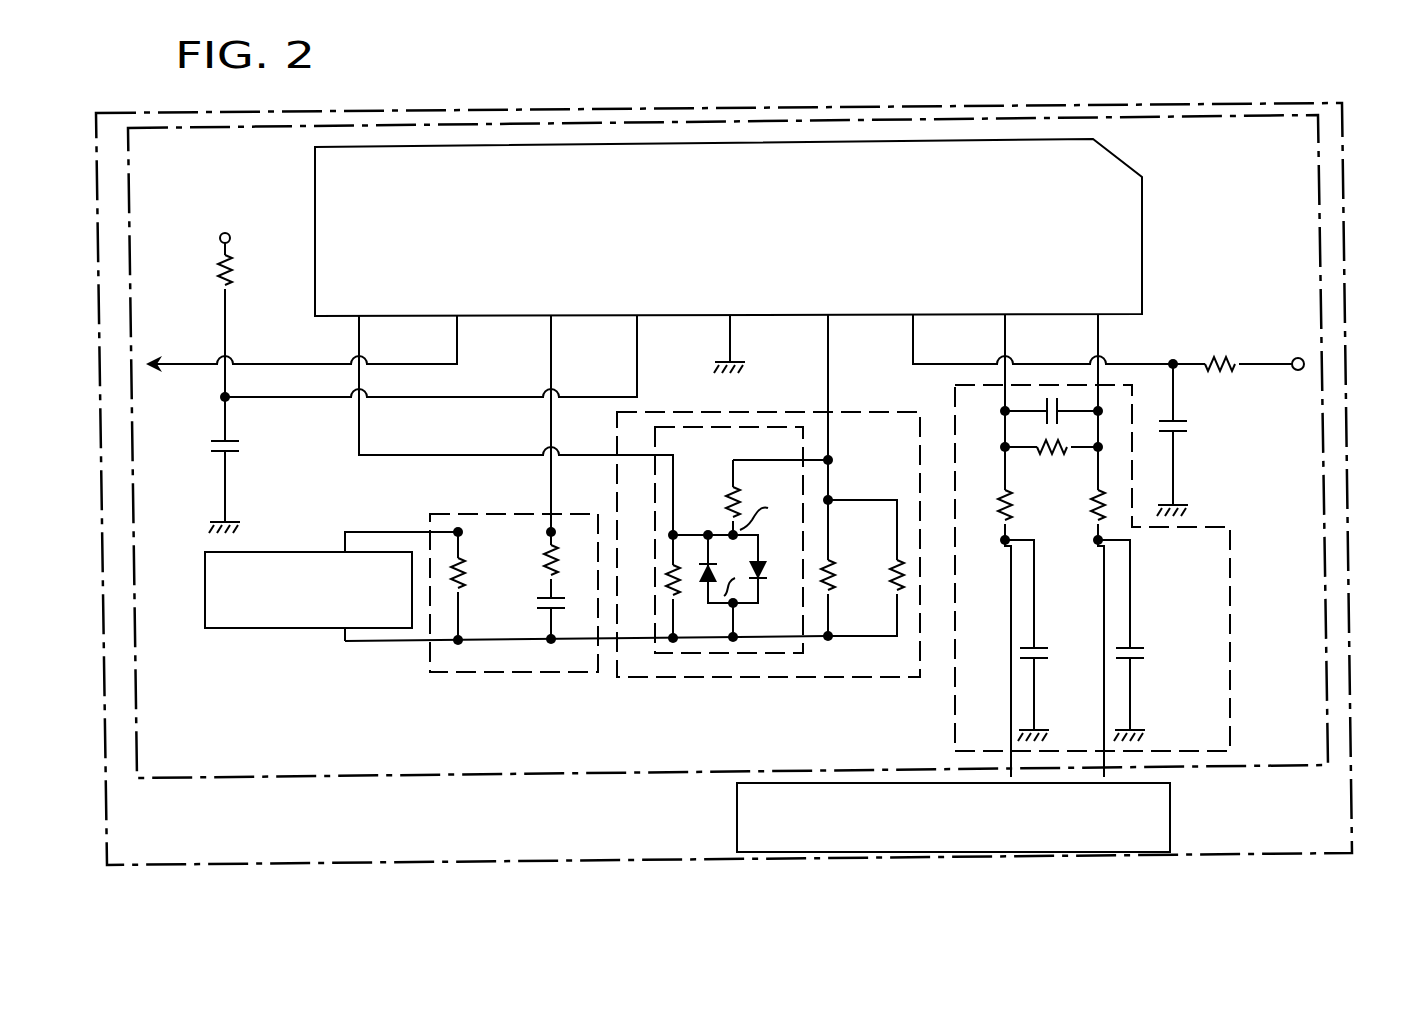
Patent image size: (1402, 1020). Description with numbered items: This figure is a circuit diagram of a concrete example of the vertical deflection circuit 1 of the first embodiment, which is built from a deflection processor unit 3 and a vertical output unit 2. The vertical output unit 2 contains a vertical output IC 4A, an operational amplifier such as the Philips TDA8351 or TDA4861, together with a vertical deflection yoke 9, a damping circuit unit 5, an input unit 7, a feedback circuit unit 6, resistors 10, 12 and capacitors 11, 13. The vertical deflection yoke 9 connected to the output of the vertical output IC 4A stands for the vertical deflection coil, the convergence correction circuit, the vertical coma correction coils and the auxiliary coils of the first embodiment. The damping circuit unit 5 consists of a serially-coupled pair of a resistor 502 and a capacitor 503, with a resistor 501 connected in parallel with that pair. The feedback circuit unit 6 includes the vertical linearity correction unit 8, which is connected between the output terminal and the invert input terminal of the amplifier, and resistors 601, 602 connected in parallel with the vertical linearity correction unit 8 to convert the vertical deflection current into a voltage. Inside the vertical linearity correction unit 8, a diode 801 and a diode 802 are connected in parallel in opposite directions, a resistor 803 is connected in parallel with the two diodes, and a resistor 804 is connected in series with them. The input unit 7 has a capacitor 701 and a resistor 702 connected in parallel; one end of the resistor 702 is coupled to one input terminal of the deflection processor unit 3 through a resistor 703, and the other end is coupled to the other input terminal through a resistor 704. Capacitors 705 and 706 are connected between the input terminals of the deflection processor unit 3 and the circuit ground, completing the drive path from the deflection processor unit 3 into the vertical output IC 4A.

The vertical deflection circuit 1 is at (1348, 663).
The vertical output unit 2 is at (477, 776).
The deflection processor unit 3 is at (735, 823).
The vertical output IC 4A is at (1143, 222).
The damping circuit unit 5 is at (479, 533).
The feedback circuit unit 6 is at (752, 534).
The input unit 7 is at (1117, 546).
The vertical linearity correction unit 8 is at (729, 590).
The vertical deflection yoke 9 is at (258, 628).
The resistor 10 is at (1236, 370).
The capacitor 11 is at (1185, 432).
The resistor 12 is at (228, 262).
The capacitor 13 is at (242, 452).
The resistor 501 is at (453, 560).
The resistor 502 is at (547, 552).
The capacitor 503 is at (547, 604).
The resistor 601 is at (838, 560).
The resistor 602 is at (888, 576).
The capacitor 701 is at (1052, 392).
The resistor 702 is at (1046, 452).
The resistor 703 is at (1013, 498).
The resistor 704 is at (1100, 520).
The capacitor 705 is at (1040, 648).
The capacitor 706 is at (1135, 648).
The diode 801 is at (704, 580).
The diode 802 is at (767, 580).
The resistor 803 is at (688, 560).
The resistor 804 is at (727, 488).